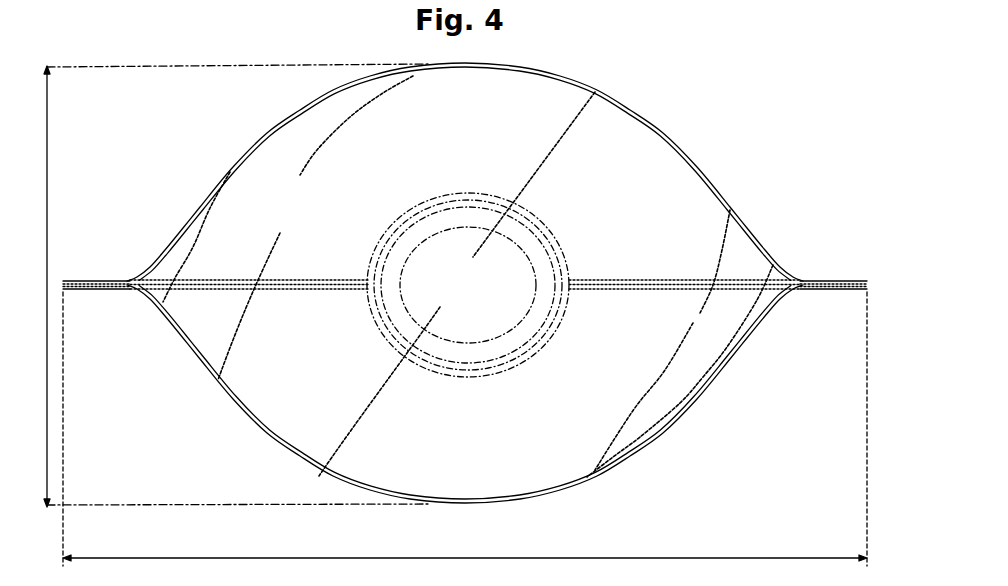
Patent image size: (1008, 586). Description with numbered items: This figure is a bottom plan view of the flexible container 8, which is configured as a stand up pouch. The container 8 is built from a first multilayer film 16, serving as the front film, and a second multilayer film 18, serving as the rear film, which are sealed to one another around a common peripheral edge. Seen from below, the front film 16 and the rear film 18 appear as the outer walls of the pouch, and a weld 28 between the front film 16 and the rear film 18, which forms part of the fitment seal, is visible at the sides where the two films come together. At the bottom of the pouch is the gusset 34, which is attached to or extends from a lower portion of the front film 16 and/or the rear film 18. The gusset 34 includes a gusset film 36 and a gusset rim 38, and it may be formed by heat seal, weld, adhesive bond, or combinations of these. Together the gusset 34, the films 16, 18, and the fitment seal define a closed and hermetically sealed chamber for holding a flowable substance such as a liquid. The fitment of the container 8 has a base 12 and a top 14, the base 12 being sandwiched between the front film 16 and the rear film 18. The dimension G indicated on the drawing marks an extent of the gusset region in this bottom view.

The flexible container 8 is at (465, 286).
The base 12 is at (554, 250).
The top 14 is at (473, 193).
The first multilayer film 16 is at (377, 247).
The second multilayer film 18 is at (377, 317).
The weld 28 is at (93, 279).
The gusset 34 is at (617, 99).
The gusset film 36 is at (579, 423).
The gusset rim 38 is at (521, 503).
The gap dimension G is at (48, 160).